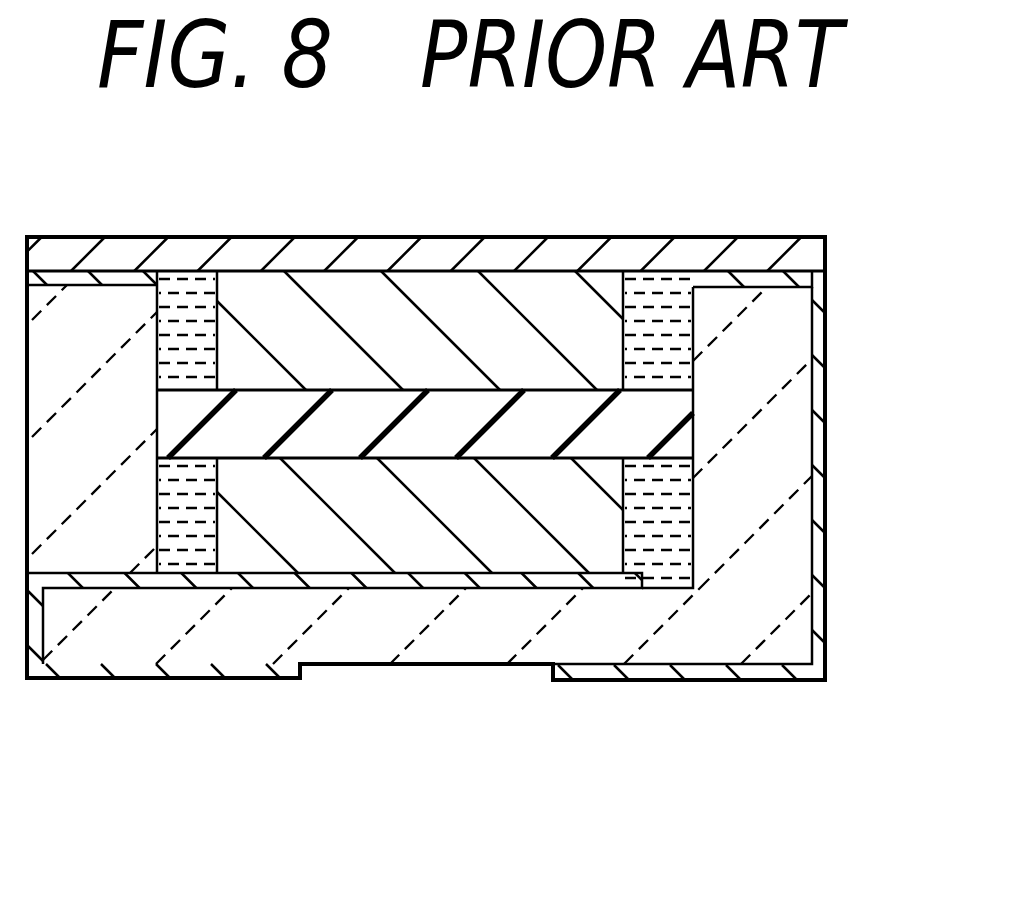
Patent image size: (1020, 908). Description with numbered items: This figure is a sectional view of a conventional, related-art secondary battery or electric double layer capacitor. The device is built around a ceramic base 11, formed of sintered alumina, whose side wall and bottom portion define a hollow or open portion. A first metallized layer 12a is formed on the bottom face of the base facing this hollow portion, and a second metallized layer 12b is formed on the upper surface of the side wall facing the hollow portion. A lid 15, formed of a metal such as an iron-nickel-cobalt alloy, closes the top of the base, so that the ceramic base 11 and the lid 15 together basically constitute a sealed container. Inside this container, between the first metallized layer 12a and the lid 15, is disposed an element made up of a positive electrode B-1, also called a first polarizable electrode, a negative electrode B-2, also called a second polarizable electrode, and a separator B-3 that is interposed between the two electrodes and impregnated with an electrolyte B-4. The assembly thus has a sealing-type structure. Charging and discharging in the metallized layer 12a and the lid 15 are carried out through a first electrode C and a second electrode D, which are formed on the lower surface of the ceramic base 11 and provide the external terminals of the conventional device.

The lid 15 is at (560, 250).
The second metallized layer 12b is at (755, 280).
The first metallized layer 12a is at (383, 584).
The ceramic base 11 is at (723, 633).
The electrolyte B-4 is at (185, 280).
The negative electrode B-2 is at (593, 345).
The separator B-3 is at (665, 428).
The positive electrode B-1 is at (593, 530).
The first electrode C is at (157, 668).
The second electrode D is at (716, 672).